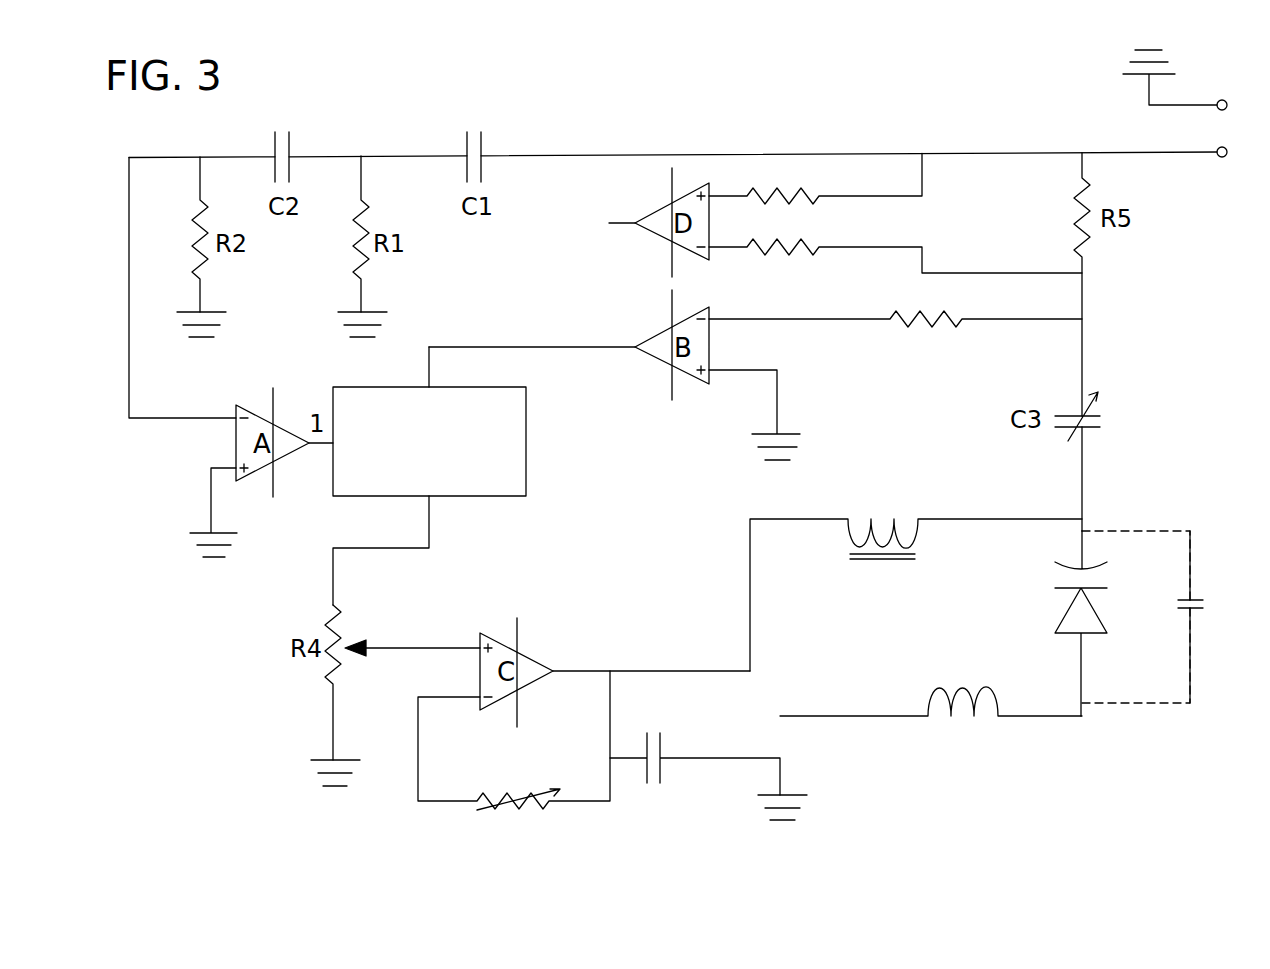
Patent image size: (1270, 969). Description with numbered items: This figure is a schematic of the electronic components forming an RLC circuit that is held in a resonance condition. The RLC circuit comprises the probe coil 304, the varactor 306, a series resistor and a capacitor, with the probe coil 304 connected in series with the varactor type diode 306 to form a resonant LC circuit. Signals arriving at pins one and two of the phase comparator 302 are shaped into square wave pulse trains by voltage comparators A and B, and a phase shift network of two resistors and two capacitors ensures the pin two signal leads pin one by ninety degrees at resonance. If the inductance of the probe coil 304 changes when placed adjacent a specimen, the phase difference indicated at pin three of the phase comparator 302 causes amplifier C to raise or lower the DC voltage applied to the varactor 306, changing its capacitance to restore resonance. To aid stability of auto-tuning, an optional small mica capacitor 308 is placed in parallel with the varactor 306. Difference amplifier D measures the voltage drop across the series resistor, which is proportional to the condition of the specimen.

The phase comparator 302 is at (487, 497).
The probe coil 304 is at (977, 716).
The varactor 306 is at (1093, 633).
The mica capacitor 308 is at (1155, 531).